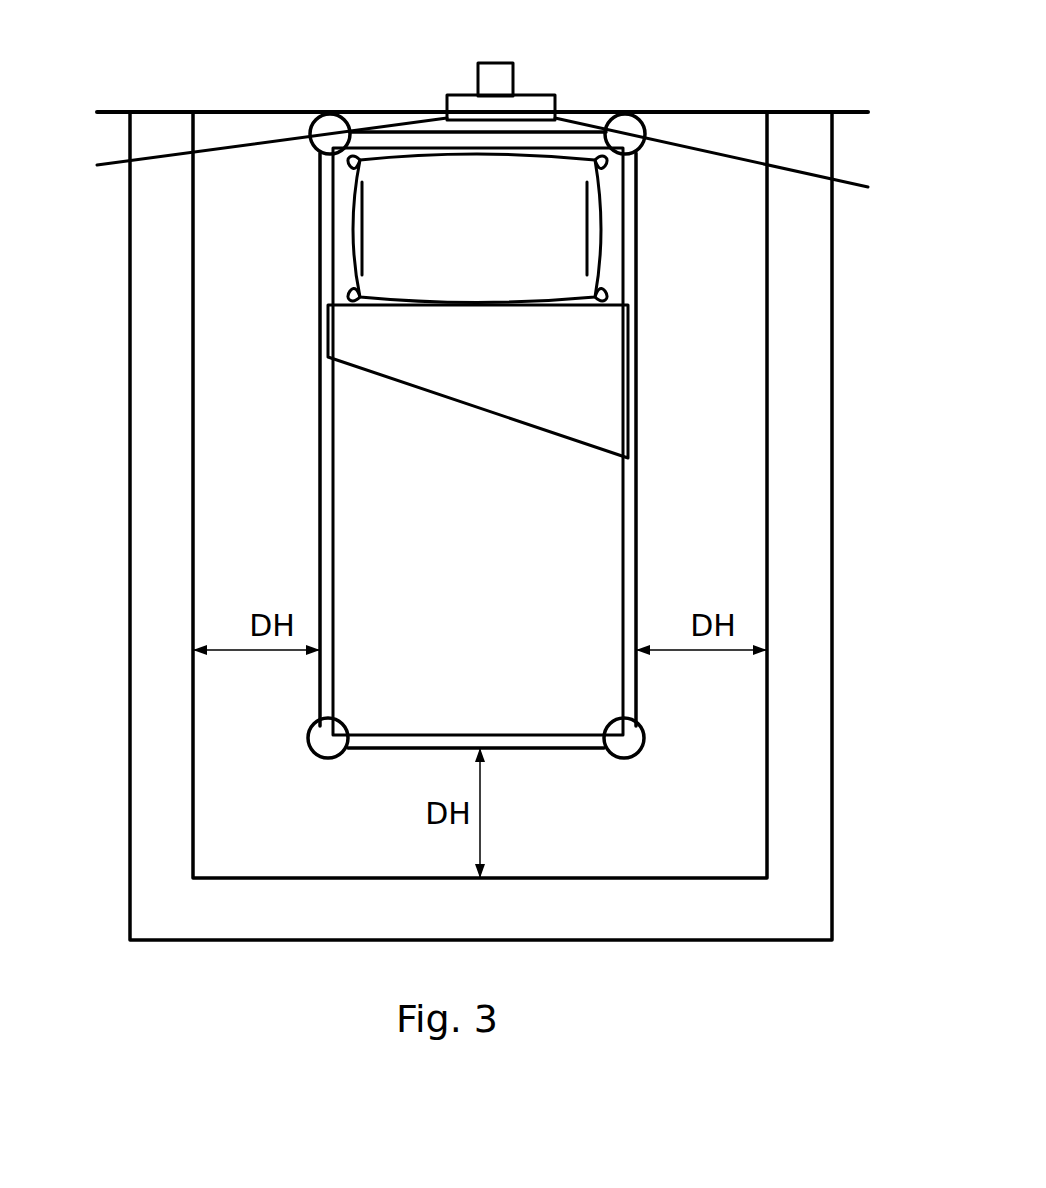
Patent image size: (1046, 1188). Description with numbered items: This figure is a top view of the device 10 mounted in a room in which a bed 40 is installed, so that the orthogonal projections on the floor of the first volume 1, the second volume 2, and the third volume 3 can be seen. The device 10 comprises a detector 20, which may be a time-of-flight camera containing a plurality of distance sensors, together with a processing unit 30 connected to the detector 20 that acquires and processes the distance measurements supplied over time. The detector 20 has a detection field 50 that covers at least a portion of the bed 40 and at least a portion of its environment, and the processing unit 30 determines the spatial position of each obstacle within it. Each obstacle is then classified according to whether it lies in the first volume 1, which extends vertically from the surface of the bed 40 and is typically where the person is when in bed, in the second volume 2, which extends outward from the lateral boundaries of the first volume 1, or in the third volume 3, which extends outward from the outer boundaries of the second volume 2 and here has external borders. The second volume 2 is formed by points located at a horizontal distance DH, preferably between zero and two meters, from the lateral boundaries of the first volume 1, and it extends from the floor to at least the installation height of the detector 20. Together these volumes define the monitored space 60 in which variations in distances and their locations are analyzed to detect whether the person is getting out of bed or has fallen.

The first spatial volume 1 is at (352, 520).
The second spatial volume 2 is at (266, 563).
The third volume 3 is at (162, 591).
The device 10 is at (676, 20).
The detector 20 is at (555, 100).
The processing unit 30 is at (513, 75).
The bed 40 is at (640, 565).
The detection field 50 is at (235, 136).
The monitored space 60 is at (100, 402).